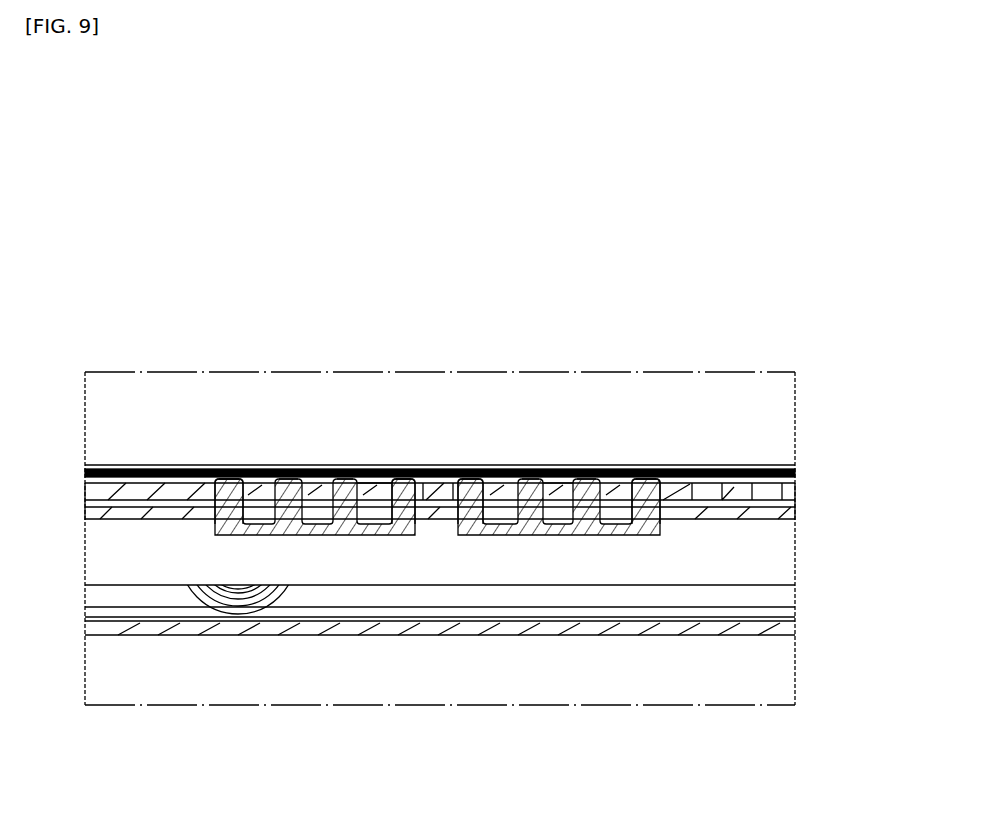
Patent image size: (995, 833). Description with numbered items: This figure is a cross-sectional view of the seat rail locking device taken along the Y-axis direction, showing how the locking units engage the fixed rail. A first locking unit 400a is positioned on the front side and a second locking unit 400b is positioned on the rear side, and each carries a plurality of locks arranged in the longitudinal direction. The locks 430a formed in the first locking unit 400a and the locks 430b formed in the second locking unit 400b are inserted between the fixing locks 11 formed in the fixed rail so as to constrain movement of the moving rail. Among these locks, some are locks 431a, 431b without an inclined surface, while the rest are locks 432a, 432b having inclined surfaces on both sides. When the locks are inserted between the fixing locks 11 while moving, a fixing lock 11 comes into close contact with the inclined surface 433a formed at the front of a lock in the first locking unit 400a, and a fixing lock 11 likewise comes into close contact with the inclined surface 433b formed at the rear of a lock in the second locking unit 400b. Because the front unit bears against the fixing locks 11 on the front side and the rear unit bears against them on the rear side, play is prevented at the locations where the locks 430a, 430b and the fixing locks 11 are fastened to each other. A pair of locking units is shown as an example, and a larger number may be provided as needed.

The fixing lock 11 is at (443, 492).
The first locking unit 400a is at (337, 552).
The second locking unit 400b is at (553, 552).
The lock 430a is at (392, 307).
The lock 430b is at (643, 307).
The lock without inclined surface 431a is at (230, 492).
The lock without inclined surface 431b is at (647, 482).
The lock with inclined surfaces 432a is at (394, 478).
The lock with inclined surfaces 432b is at (470, 482).
The inclined surface 433a is at (370, 485).
The inclined surface 433b is at (545, 492).